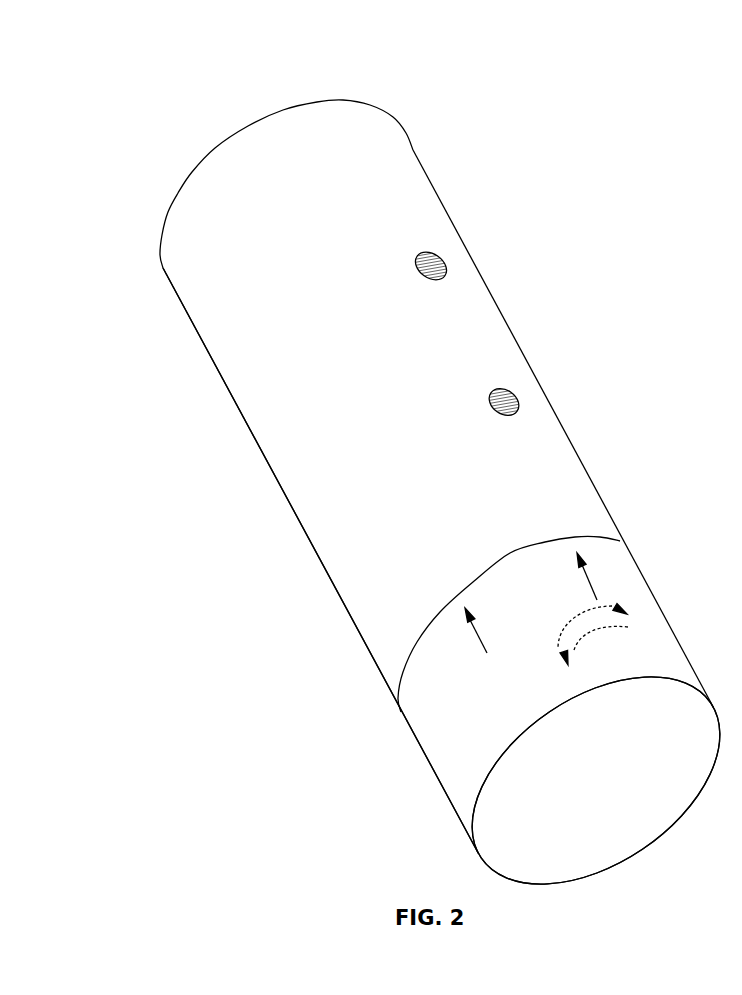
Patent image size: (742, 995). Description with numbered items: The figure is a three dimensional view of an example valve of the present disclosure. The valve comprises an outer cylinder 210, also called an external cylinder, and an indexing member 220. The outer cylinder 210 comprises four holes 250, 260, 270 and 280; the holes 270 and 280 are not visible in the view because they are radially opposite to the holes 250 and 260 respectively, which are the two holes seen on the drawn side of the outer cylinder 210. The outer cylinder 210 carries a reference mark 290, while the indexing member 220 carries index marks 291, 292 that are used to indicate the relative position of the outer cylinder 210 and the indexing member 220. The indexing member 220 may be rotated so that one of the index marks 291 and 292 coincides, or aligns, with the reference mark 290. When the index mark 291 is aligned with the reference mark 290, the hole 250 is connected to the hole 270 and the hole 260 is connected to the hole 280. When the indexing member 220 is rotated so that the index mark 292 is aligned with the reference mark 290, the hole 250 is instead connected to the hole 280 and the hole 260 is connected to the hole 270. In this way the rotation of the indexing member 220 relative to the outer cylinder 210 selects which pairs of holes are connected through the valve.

The outer cylinder 210 is at (388, 196).
The indexing member 220 is at (455, 715).
The hole 250 is at (452, 252).
The hole 260 is at (525, 387).
The hole 270 is at (225, 398).
The hole 280 is at (318, 576).
The reference mark 290 is at (556, 512).
The index mark 291 is at (589, 583).
The index mark 292 is at (481, 645).